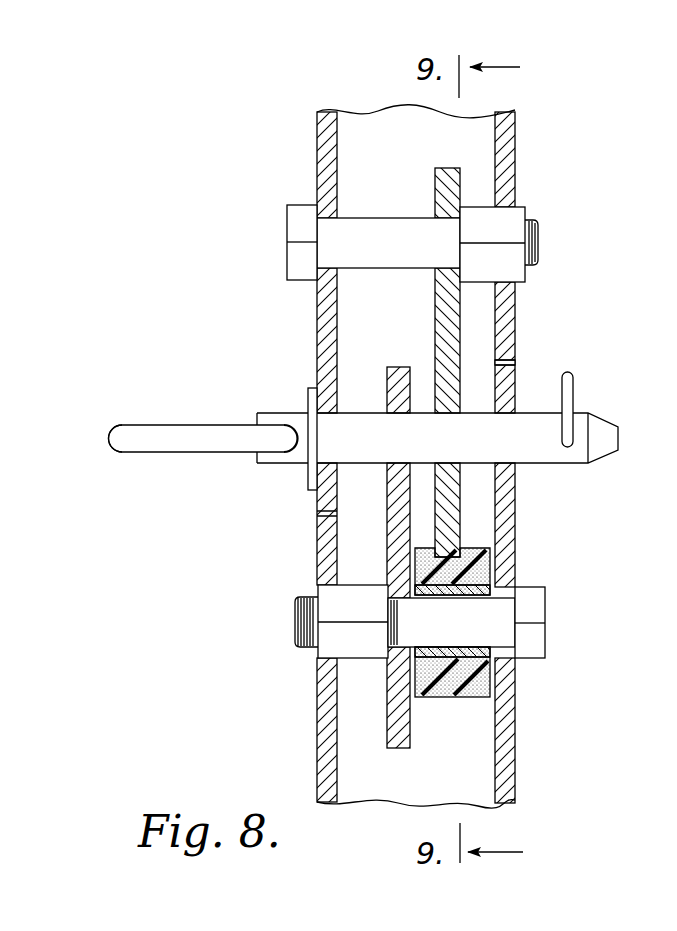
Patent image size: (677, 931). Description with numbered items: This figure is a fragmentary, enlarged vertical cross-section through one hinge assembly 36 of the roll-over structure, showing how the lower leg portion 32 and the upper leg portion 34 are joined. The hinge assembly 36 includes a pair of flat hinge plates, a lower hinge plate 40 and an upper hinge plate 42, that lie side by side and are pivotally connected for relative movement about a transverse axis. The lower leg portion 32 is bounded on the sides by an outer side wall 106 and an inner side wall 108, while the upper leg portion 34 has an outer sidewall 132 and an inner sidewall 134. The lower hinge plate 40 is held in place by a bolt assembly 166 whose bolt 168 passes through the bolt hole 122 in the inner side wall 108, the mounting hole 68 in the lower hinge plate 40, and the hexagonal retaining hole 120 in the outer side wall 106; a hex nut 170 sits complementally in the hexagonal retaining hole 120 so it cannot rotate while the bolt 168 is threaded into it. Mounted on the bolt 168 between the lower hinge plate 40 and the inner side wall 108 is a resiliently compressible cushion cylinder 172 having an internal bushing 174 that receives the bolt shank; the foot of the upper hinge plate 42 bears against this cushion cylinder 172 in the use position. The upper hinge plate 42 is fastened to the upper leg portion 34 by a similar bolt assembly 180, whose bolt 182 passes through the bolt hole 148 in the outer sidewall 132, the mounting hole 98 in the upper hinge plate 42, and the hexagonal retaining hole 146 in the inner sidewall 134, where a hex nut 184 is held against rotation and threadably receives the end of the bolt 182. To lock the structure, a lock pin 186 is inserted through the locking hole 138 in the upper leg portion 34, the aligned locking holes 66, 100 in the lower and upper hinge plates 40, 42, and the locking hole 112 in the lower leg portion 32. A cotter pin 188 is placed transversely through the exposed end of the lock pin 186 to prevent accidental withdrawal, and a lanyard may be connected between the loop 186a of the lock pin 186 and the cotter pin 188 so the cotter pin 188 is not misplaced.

The lower leg portion 32 is at (519, 773).
The upper leg portion 34 is at (519, 132).
The hinge assembly 36 is at (469, 495).
The lower hinge plate 40 is at (377, 701).
The upper hinge plate 42 is at (469, 317).
The locking hole 66 is at (398, 462).
The mounting hole 68 is at (405, 652).
The mounting hole 98 is at (446, 268).
The locking hole 100 is at (449, 413).
The outer side wall 106 is at (326, 775).
The inner side wall 108 is at (508, 690).
The locking hole 112 is at (506, 410).
The hexagonal retaining hole 120 is at (324, 588).
The bolt hole 122 is at (512, 647).
The outer sidewall 132 is at (326, 133).
The inner sidewall 134 is at (505, 162).
The locking hole 138 is at (340, 411).
The hexagonal retaining hole 146 is at (500, 280).
The bolt hole 148 is at (322, 230).
The bolt assembly 166 is at (550, 605).
The bolt 168 is at (487, 613).
The hex nut 170 is at (342, 645).
The cushion cylinder 172 is at (478, 688).
The internal bushing 174 is at (457, 653).
The bolt assembly 180 is at (277, 263).
The bolt 182 is at (362, 230).
The hex nut 184 is at (513, 223).
The lock pin 186 is at (229, 433).
The loop 186a is at (132, 443).
The cotter pin 188 is at (568, 395).